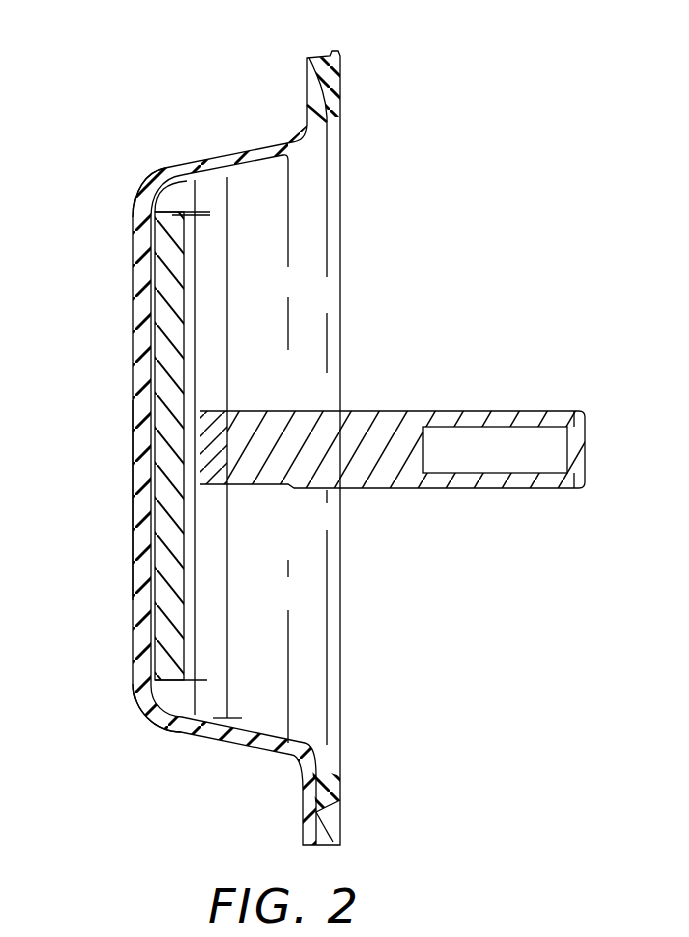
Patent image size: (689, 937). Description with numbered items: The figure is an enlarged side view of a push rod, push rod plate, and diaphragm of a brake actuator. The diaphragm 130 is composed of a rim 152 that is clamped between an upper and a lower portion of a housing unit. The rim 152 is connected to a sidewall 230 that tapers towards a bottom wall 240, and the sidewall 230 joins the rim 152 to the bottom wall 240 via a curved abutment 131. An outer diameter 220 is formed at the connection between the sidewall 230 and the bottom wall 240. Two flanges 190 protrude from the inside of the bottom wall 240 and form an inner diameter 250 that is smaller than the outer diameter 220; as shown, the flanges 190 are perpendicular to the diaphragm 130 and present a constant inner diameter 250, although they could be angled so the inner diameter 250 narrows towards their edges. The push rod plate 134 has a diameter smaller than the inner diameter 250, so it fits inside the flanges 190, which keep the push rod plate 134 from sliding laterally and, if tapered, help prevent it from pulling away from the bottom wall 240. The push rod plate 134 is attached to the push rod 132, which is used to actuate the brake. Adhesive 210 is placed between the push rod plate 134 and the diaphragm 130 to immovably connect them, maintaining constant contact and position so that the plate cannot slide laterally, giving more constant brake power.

The diaphragm 130 is at (137, 267).
The curved abutment 131 is at (162, 175).
The push rod 132 is at (427, 411).
The push rod plate 134 is at (155, 296).
The rim 152 is at (342, 63).
The flanges 190 is at (179, 177).
The adhesive 210 is at (133, 448).
The outer diameter 220 is at (230, 211).
The sidewall 230 is at (272, 757).
The bottom wall 240 is at (137, 525).
The inner diameter 250 is at (162, 735).